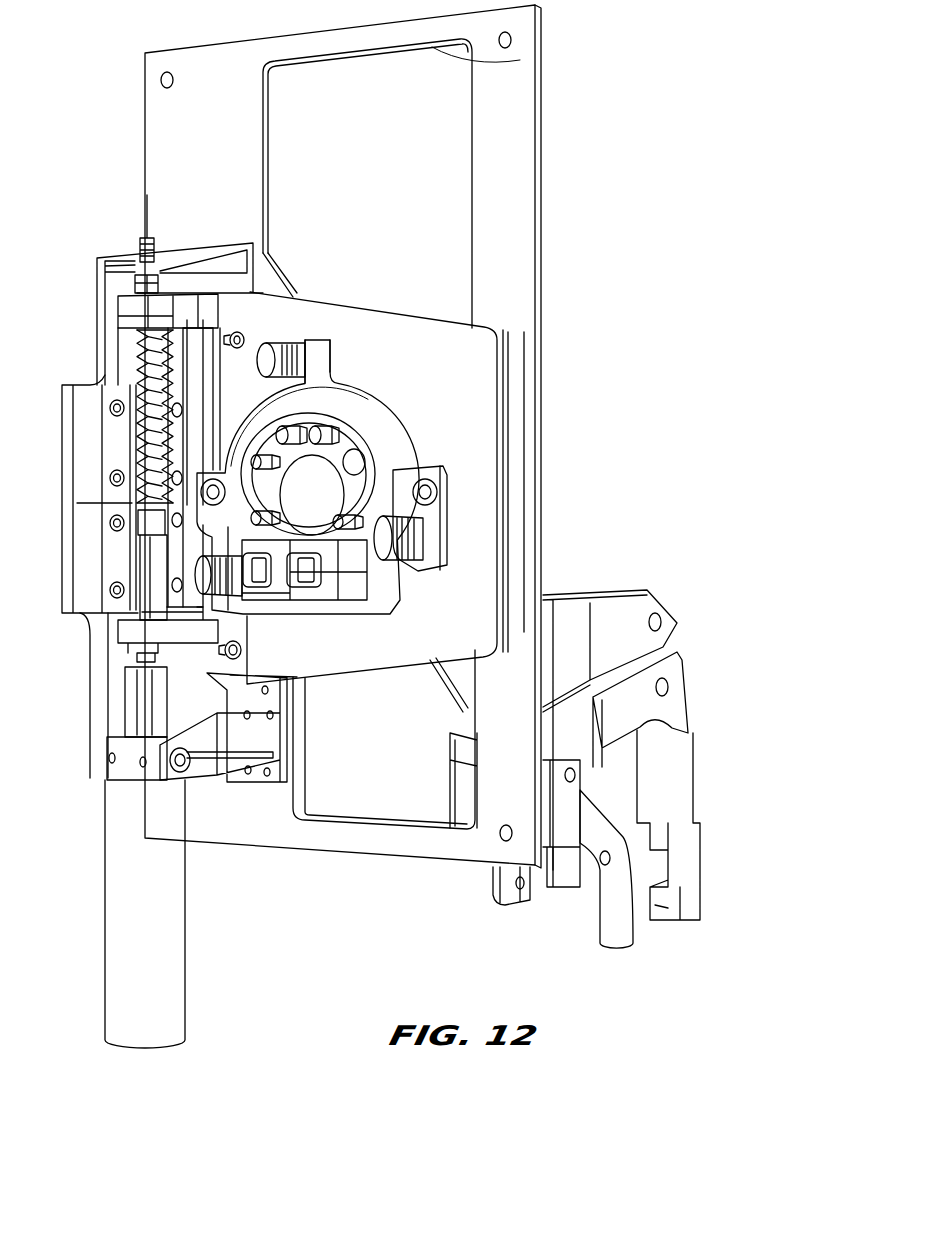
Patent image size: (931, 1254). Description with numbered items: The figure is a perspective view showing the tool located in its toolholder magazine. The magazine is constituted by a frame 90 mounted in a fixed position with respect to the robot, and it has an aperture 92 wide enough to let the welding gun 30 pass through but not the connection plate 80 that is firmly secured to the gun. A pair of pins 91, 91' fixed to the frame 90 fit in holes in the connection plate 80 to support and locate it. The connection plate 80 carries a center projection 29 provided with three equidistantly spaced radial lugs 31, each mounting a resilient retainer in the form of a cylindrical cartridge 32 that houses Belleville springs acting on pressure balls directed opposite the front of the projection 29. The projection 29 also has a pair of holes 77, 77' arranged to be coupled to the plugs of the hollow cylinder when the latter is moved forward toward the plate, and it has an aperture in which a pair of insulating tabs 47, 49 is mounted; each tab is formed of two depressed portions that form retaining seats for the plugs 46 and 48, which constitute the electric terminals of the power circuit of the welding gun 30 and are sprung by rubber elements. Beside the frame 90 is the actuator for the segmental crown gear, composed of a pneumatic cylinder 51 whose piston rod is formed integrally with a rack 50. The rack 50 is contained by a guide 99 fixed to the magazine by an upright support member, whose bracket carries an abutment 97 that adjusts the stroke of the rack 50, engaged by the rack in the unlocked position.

The center projection 29 is at (404, 415).
The welding gun 30 is at (567, 630).
The radial lug 31 is at (318, 350).
The cylindrical cartridge 32 is at (285, 347).
The plug 46 is at (305, 577).
The insulating tab 47 is at (355, 558).
The plug 48 is at (255, 577).
The insulating tab 49 is at (280, 550).
The rack 50 is at (152, 593).
The pneumatic cylinder 51 is at (120, 912).
The hole 77 is at (135, 463).
The hole 77' is at (507, 459).
The connection plate 80 is at (484, 365).
The frame 90 is at (517, 127).
The pin 91 is at (269, 285).
The pin 91' is at (228, 711).
The aperture 92 is at (441, 58).
The abutment 97 is at (137, 283).
The guide 99 is at (115, 552).